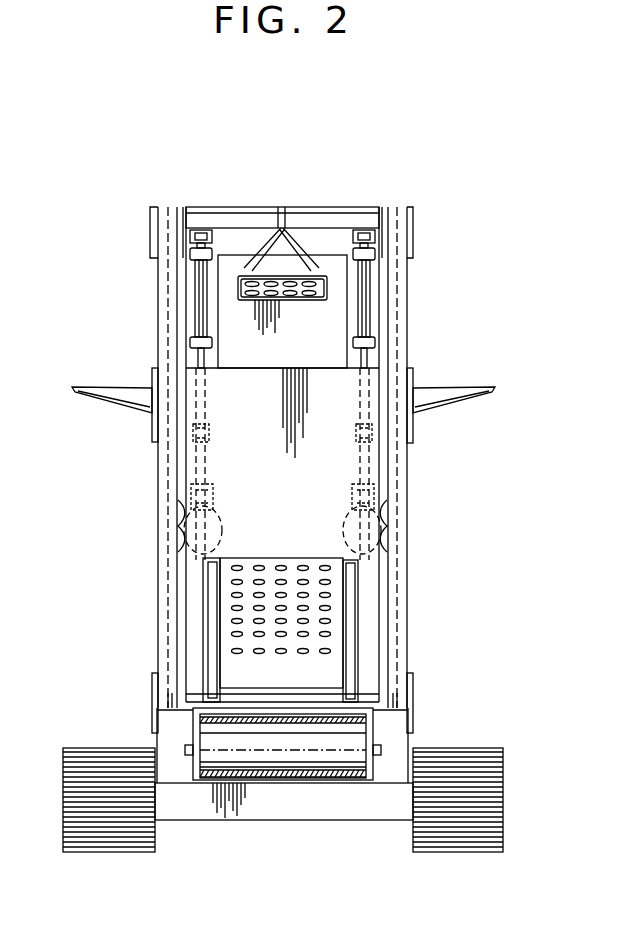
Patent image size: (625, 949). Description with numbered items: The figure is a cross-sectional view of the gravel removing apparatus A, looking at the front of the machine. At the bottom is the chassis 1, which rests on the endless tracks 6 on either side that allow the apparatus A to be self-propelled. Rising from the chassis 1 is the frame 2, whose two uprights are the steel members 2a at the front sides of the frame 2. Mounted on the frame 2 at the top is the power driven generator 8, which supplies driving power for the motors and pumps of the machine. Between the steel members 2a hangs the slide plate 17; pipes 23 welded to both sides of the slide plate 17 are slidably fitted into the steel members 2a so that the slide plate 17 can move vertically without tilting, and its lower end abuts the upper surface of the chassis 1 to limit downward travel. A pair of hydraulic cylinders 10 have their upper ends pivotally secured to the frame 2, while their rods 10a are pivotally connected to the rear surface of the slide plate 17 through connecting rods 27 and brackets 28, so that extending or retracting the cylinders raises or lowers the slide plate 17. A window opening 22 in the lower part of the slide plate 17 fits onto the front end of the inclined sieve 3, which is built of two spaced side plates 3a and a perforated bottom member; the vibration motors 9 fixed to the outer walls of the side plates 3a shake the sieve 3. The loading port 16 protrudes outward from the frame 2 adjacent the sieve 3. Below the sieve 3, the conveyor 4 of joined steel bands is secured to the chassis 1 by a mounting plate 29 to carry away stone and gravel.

The chassis 1 is at (320, 820).
The frame 2 is at (158, 550).
The steel members 2a is at (170, 611).
The sieve 3 is at (292, 557).
The side plates 3a is at (210, 646).
The conveyor 4 is at (259, 777).
The endless tracks 6 is at (110, 852).
The power driven generator 8 is at (228, 258).
The vibration motor 9 is at (172, 506).
The hydraulic cylinder 10 is at (206, 313).
The rods 10a is at (212, 354).
The loading port 16 is at (443, 395).
The slide plate 17 is at (291, 418).
The window opening 22 is at (270, 692).
The pipes 23 is at (186, 391).
The connecting rods 27 is at (204, 468).
The brackets 28 is at (207, 497).
The mounting plate 29 is at (190, 762).
The gravel removing apparatus A is at (430, 271).